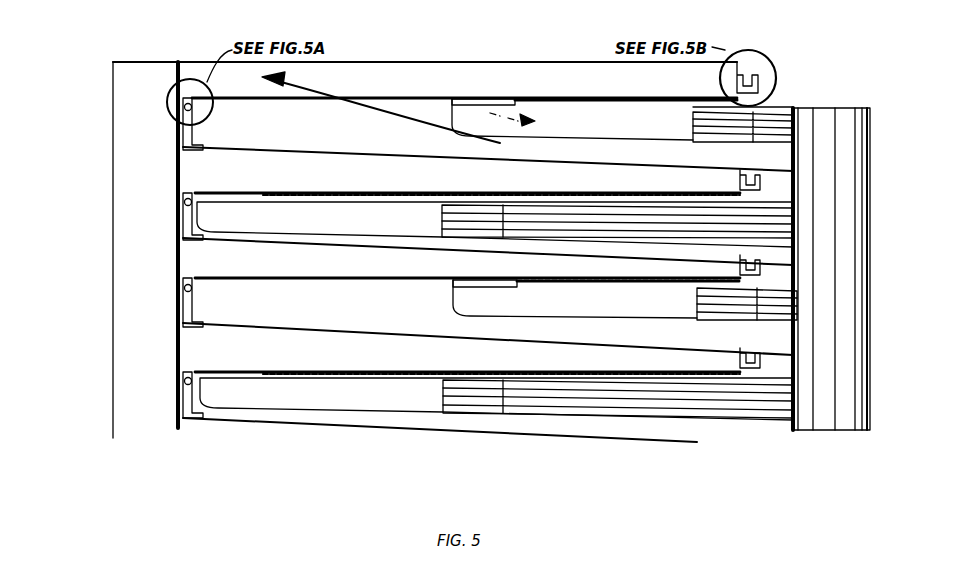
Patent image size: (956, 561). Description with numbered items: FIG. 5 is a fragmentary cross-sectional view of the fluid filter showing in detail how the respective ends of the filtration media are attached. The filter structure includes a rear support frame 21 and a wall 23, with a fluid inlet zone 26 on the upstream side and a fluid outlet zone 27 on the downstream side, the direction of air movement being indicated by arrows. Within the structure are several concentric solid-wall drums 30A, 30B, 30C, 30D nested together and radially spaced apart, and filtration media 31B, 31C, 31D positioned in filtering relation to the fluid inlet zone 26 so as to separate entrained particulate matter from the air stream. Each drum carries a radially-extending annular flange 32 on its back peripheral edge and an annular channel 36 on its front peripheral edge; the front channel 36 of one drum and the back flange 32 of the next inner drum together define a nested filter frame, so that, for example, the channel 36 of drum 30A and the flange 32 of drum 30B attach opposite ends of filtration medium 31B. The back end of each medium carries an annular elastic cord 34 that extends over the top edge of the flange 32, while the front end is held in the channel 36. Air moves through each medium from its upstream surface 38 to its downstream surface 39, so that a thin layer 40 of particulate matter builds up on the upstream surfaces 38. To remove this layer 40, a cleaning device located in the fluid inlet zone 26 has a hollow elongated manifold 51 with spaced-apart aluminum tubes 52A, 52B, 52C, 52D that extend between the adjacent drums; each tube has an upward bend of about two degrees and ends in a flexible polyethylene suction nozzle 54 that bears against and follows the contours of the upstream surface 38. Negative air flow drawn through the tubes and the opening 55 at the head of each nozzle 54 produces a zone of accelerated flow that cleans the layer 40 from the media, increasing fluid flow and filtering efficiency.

The rear support frame 21 is at (113, 432).
The wall 23 is at (450, 61).
The fluid inlet zone 26 is at (705, 432).
The fluid outlet zone 27 is at (143, 123).
The drum 30A is at (178, 165).
The drum 30B is at (178, 252).
The drum 30C is at (178, 342).
The drum 30D is at (245, 420).
The filtration medium 31B is at (178, 183).
The filtration medium 31C is at (178, 273).
The filtration medium 31D is at (178, 360).
The annular flange 32 is at (183, 230).
The elastic cord 34 is at (184, 203).
The annular channel 36 is at (760, 185).
The upstream surface 38 is at (268, 100).
The downstream surface 39 is at (339, 280).
The layer of particulate matter 40 is at (640, 96).
The manifold 51 is at (847, 132).
The tube 52A is at (780, 112).
The tube 52B is at (795, 214).
The tube 52C is at (795, 300).
The tube 52D is at (782, 420).
The suction nozzle 54 is at (650, 126).
The opening 55 is at (474, 100).